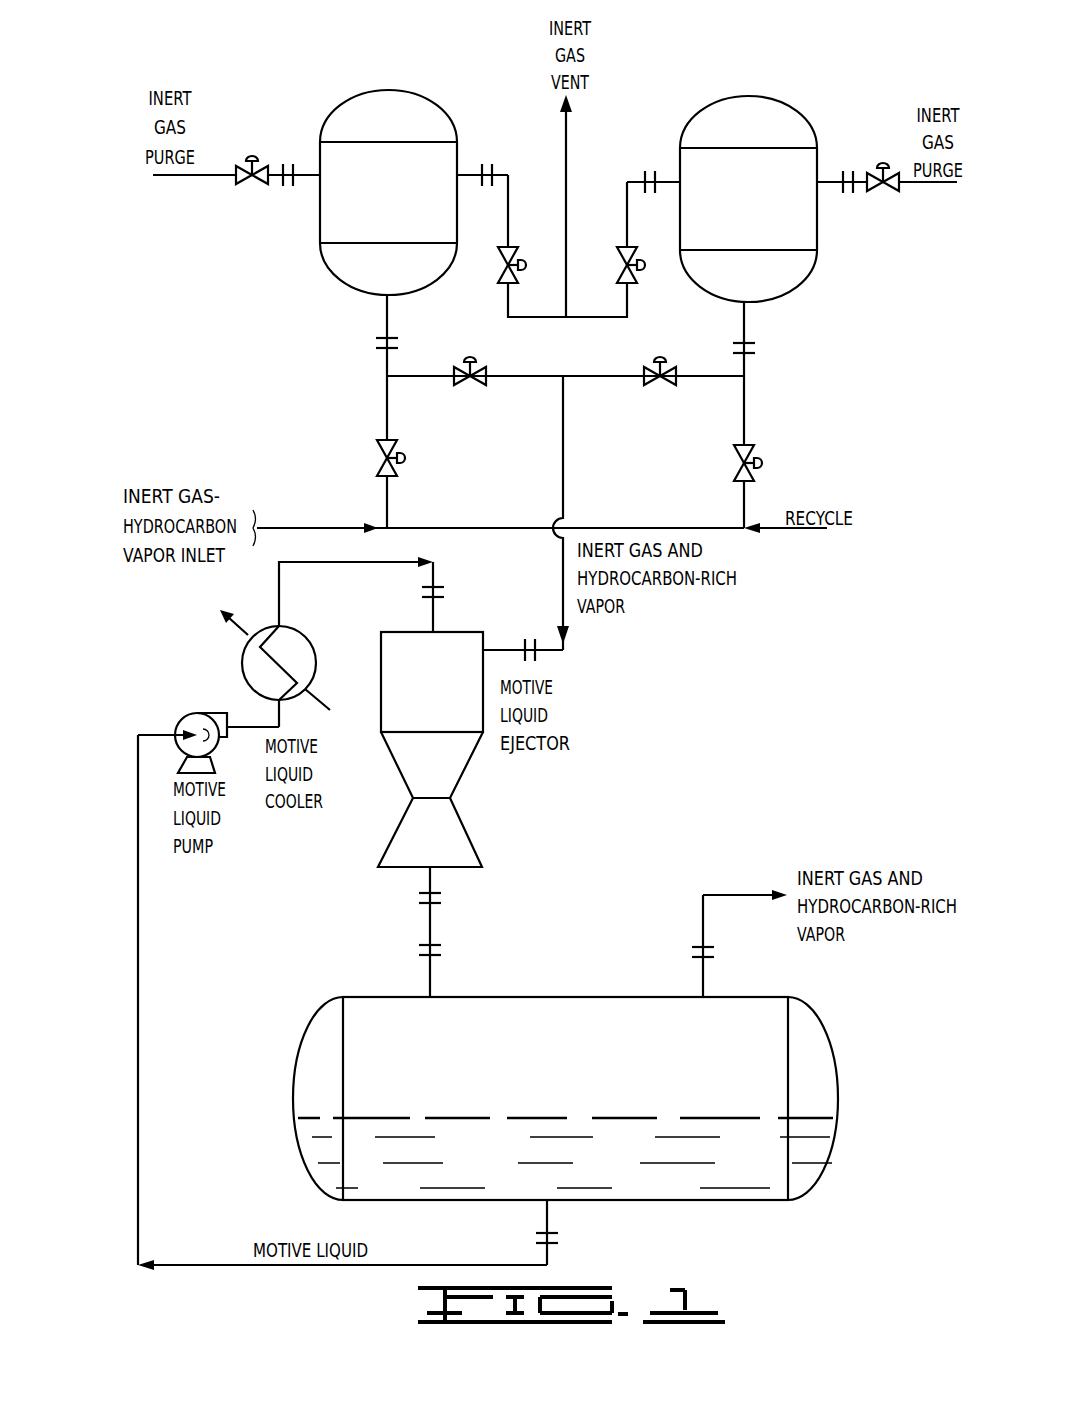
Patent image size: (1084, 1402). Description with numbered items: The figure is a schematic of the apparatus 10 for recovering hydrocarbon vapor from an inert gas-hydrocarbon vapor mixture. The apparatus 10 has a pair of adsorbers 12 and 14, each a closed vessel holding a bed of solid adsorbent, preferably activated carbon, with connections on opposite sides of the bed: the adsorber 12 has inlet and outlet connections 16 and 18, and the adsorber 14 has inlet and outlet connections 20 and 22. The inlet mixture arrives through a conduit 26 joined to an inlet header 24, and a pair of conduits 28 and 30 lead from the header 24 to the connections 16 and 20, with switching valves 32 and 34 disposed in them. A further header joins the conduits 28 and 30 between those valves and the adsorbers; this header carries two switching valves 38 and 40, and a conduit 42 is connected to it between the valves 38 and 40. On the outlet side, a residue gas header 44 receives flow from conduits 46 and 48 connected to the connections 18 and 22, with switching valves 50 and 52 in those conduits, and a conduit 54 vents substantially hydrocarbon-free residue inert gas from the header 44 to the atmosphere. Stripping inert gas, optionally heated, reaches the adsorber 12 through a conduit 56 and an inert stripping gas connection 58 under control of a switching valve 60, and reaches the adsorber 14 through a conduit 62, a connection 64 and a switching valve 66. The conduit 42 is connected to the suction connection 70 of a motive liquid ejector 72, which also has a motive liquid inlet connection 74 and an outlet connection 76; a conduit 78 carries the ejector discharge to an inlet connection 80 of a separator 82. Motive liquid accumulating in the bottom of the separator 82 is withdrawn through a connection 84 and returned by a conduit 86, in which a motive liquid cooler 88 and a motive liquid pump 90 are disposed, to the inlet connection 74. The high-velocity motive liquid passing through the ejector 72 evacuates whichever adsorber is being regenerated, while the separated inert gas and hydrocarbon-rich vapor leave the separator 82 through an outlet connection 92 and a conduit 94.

The apparatus 10 is at (775, 55).
The adsorber 12 is at (817, 218).
The adsorber 14 is at (320, 222).
The inlet connection 16 is at (747, 318).
The outlet connection 18 is at (668, 172).
The inlet connection 20 is at (386, 313).
The outlet connection 22 is at (472, 170).
The inert gas-hydrocarbon vapor mixture inlet header 24 is at (497, 520).
The conduit 26 is at (345, 520).
The conduit 28 is at (747, 410).
The conduit 30 is at (386, 405).
The switching valve 32 is at (750, 448).
The switching valve 34 is at (377, 443).
The switching valve 38 is at (678, 390).
The switching valve 40 is at (452, 390).
The conduit 42 is at (565, 482).
The residue gas header 44 is at (613, 313).
The conduit 46 is at (628, 217).
The conduit 48 is at (510, 203).
The switching valve 50 is at (627, 253).
The switching valve 52 is at (512, 247).
The conduit 54 is at (566, 182).
The conduit 56 is at (910, 190).
The inert stripping gas connection 58 is at (830, 173).
The switching valve 60 is at (883, 162).
The conduit 62 is at (218, 182).
The connection 64 is at (307, 170).
The switching valve 66 is at (252, 148).
The suction connection 70 is at (498, 647).
The motive liquid ejector 72 is at (465, 772).
The motive liquid inlet connection 74 is at (428, 617).
The outlet connection 76 is at (430, 878).
The conduit 78 is at (430, 923).
The inlet connection 80 is at (432, 973).
The separator 82 is at (593, 997).
The connection 84 is at (547, 1217).
The conduit 86 is at (380, 558).
The motive liquid cooler 88 is at (242, 653).
The motive liquid pump 90 is at (195, 713).
The outlet connection 92 is at (703, 978).
The conduit 94 is at (727, 893).